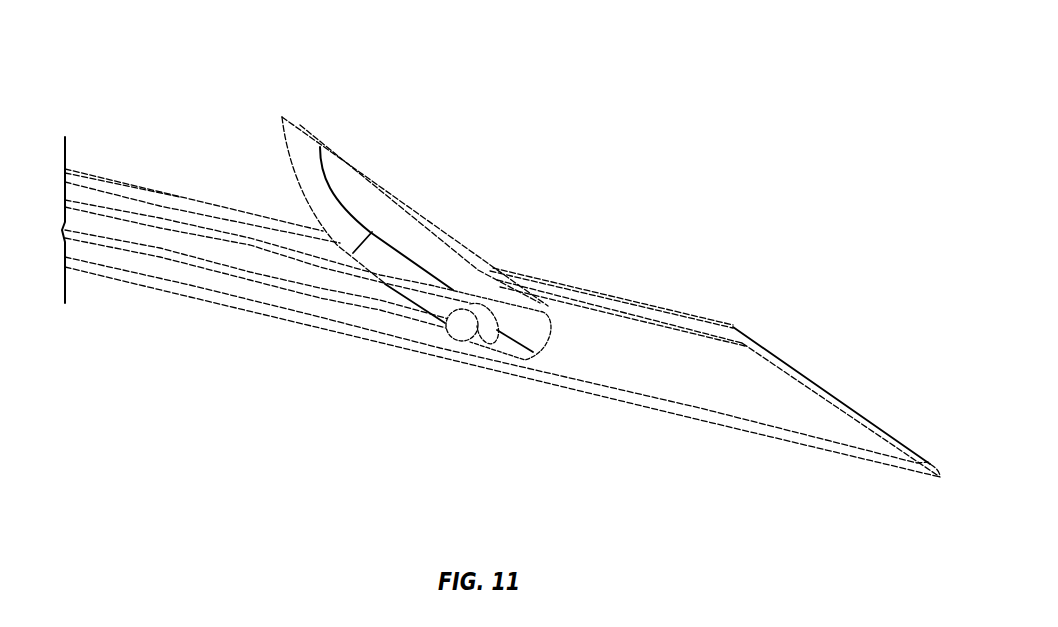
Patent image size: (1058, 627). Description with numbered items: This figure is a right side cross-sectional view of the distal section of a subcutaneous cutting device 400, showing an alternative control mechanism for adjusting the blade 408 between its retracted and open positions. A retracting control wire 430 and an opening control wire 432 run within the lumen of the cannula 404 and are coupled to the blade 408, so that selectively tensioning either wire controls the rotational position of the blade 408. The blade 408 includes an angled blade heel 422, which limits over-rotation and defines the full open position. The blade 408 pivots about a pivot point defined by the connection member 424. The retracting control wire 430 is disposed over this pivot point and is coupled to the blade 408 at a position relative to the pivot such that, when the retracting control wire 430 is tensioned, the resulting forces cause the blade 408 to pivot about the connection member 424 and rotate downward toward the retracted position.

The cutting device 400 is at (217, 77).
The cannula 404 is at (720, 340).
The blade 408 is at (367, 207).
The angled blade heel 422 is at (515, 360).
The connection member 424 is at (462, 325).
The retracting control wire 430 is at (428, 290).
The opening control wire 432 is at (297, 290).